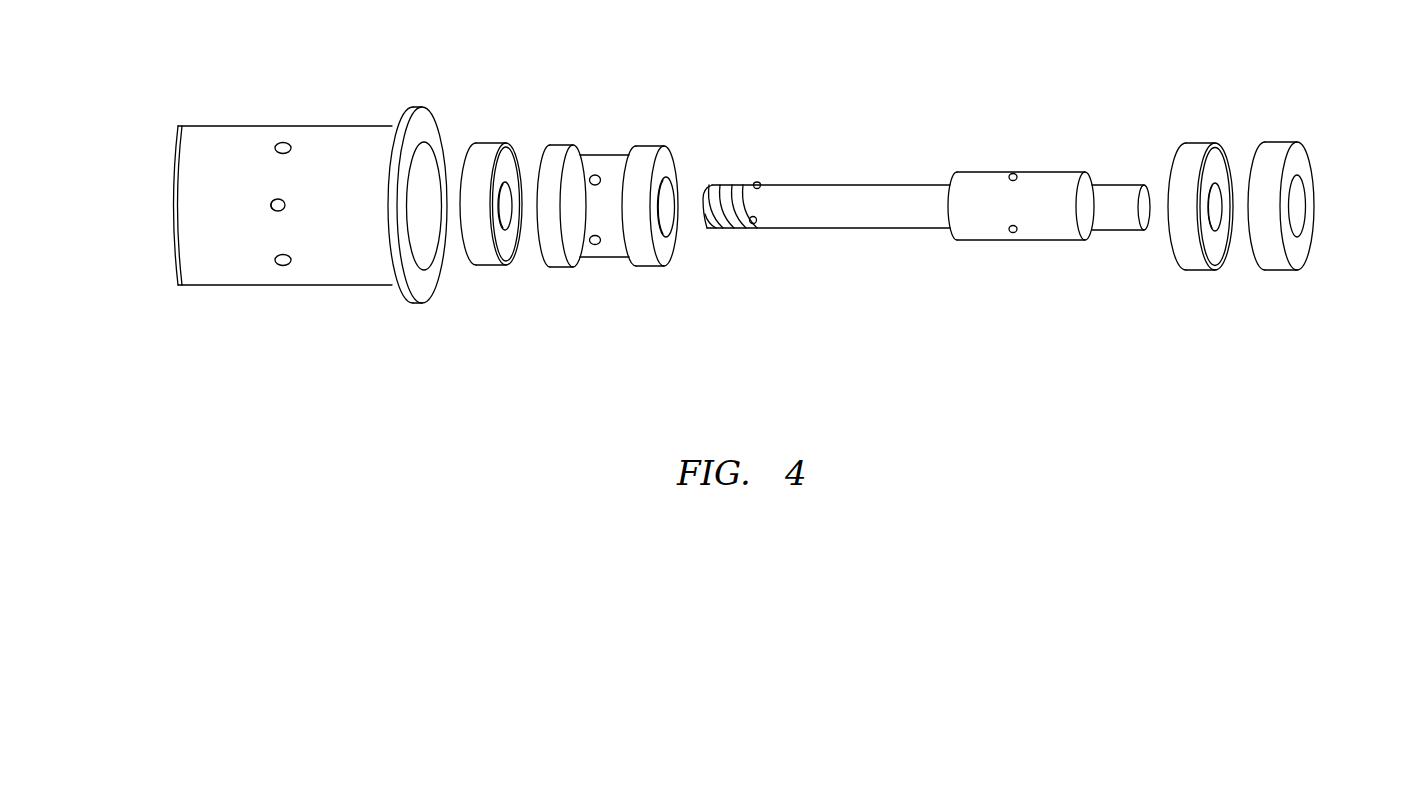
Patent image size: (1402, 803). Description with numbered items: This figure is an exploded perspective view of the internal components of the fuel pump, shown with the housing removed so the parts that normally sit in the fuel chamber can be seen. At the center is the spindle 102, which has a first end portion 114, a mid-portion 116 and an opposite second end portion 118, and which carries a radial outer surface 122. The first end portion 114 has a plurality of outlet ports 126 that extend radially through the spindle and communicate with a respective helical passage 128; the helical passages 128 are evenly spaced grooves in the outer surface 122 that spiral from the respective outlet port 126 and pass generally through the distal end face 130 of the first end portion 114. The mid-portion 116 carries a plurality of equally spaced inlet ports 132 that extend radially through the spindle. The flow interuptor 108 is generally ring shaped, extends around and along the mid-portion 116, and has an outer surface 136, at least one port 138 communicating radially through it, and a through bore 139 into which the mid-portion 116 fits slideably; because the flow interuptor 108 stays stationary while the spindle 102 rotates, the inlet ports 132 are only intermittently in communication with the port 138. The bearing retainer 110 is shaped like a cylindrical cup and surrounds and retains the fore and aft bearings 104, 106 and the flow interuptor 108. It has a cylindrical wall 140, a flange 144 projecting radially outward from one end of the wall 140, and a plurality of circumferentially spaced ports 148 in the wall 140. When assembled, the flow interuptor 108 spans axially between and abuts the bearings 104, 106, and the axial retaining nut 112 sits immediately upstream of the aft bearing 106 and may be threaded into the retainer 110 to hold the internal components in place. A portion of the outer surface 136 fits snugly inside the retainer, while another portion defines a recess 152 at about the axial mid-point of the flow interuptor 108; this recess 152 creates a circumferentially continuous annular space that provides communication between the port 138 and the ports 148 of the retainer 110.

The spindle 102 is at (922, 197).
The fore bearing 104 is at (500, 137).
The aft bearing 106 is at (1205, 136).
The flow interuptor 108 is at (623, 205).
The bearing retainer 110 is at (280, 191).
The axial retaining nut 112 is at (1318, 141).
The first end portion 114 is at (778, 184).
The mid-portion 116 is at (980, 243).
The second end portion 118 is at (1117, 185).
The outer surface 122 is at (868, 184).
The outlet ports 126 is at (758, 183).
The helical passages 128 is at (710, 184).
The distal end face 130 is at (698, 205).
The inlet ports 132 is at (1017, 228).
The outer surface 136 is at (665, 156).
The port 138 is at (594, 177).
The through bore 139 is at (669, 204).
The cylindrical wall 140 is at (328, 287).
The flange 144 is at (425, 122).
The ports 148 is at (276, 148).
The recess 152 is at (612, 153).